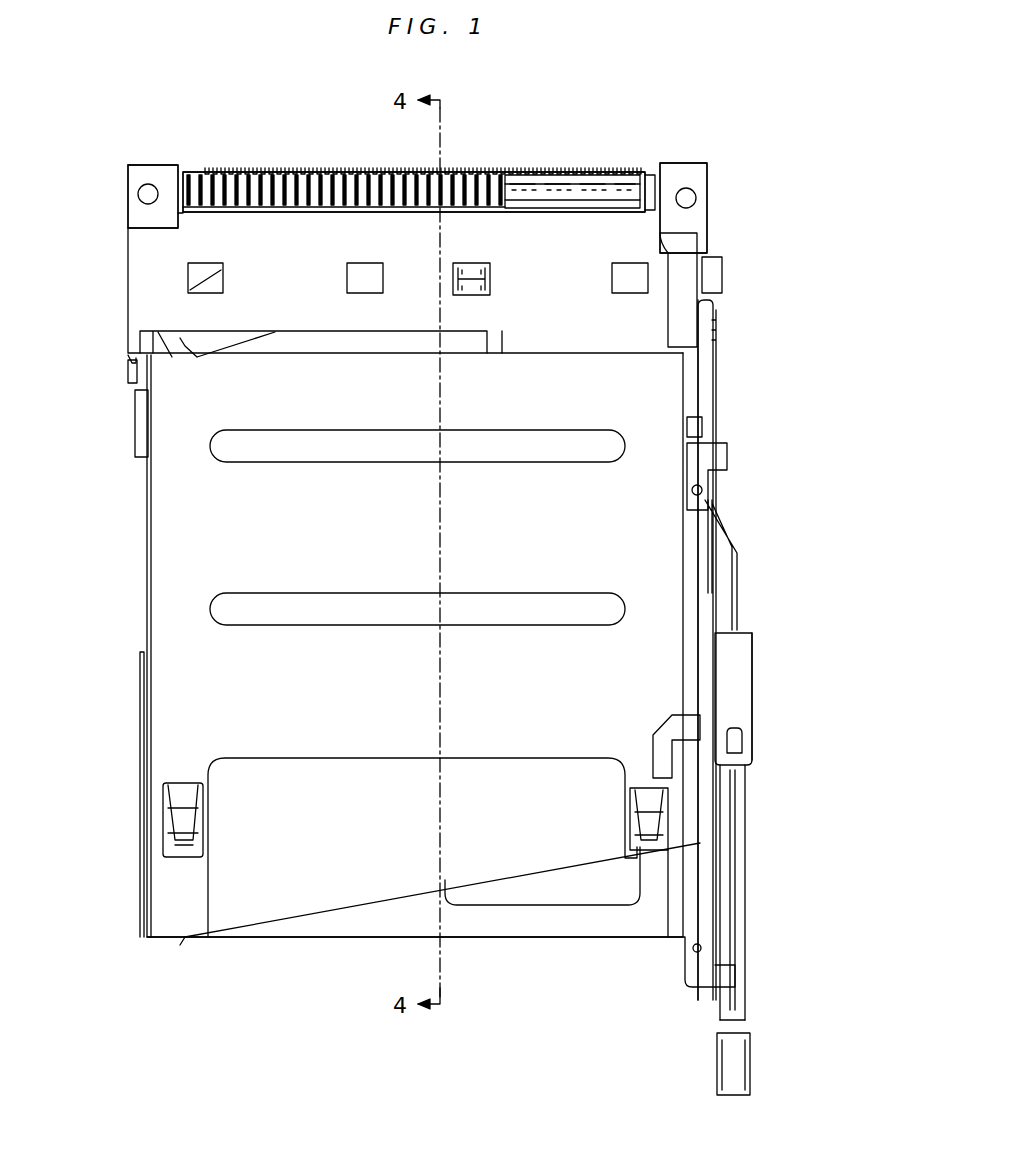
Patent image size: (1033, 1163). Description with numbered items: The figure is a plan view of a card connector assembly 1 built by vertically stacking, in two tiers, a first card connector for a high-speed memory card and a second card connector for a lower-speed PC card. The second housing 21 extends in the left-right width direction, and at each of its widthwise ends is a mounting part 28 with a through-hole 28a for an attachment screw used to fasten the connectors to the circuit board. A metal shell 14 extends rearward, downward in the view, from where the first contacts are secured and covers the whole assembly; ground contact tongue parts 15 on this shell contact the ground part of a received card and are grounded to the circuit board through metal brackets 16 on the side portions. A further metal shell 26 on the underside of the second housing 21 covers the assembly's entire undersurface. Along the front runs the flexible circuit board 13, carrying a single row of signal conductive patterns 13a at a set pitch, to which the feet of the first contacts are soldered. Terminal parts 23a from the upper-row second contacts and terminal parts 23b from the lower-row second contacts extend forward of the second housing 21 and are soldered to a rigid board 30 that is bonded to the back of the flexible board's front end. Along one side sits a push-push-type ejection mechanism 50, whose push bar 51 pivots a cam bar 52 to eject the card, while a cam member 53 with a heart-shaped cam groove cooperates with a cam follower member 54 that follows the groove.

The card connector assembly 1 is at (662, 122).
The flexible circuit board (FPC) 13 is at (361, 172).
The signal conductive patterns 13a is at (283, 185).
The metal shell 14 is at (175, 548).
The ground contact tongue parts 15 is at (178, 820).
The metal brackets 16 is at (140, 712).
The second housing 21 is at (635, 320).
The terminal parts 23a is at (578, 180).
The terminal parts 23b is at (597, 182).
The metal shell 26 is at (520, 935).
The mounting parts 28 is at (133, 175).
The through-hole 28a is at (143, 195).
The rigid board 30 is at (530, 180).
The ejection mechanisms 50 is at (765, 797).
The push bar 51 is at (718, 346).
The cam bar 52 is at (722, 272).
The cam member 53 is at (697, 607).
The cam follower member 54 is at (713, 556).